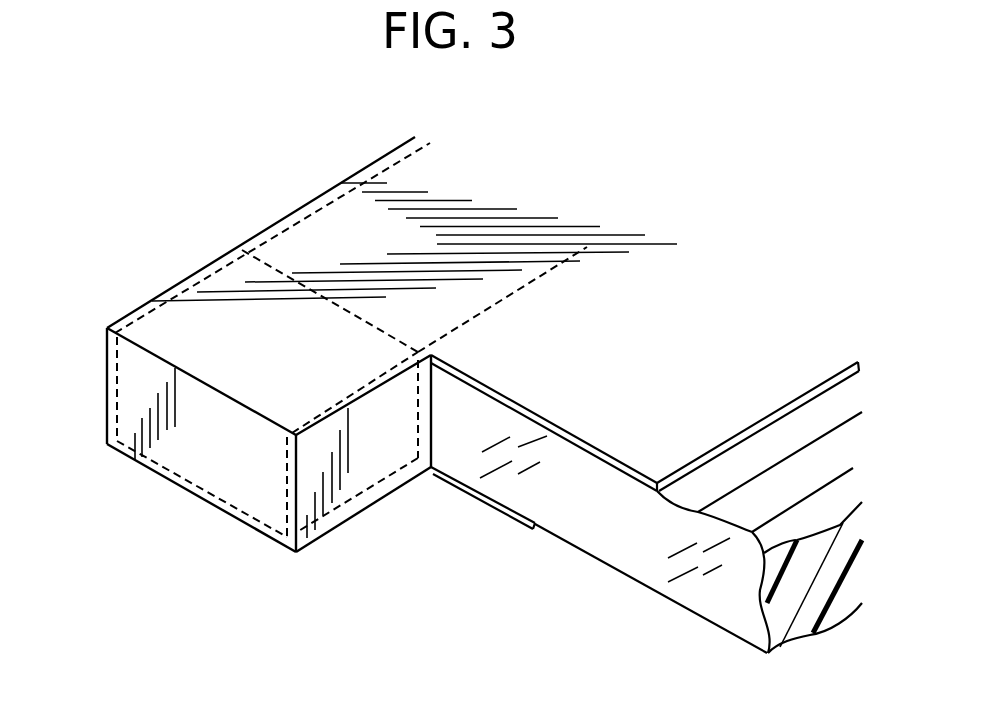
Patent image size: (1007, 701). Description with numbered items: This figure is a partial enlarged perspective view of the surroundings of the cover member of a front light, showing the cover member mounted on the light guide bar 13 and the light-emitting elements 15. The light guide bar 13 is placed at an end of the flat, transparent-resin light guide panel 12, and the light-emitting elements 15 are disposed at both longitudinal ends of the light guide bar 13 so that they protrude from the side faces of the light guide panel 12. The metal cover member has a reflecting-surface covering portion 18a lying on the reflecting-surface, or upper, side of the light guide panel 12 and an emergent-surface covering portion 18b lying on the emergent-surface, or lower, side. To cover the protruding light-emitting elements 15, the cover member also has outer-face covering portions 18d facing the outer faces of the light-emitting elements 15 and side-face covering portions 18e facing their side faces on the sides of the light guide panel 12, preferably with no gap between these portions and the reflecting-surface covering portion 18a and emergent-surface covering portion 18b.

The light guide panel 12 is at (592, 518).
The light guide bar 13 is at (348, 243).
The light-emitting elements 15 is at (233, 313).
The reflecting-surface covering portion 18a is at (673, 333).
The emergent-surface covering portion 18b is at (488, 503).
The outer-face covering portions 18d is at (208, 462).
The side-face covering portions 18e is at (378, 458).